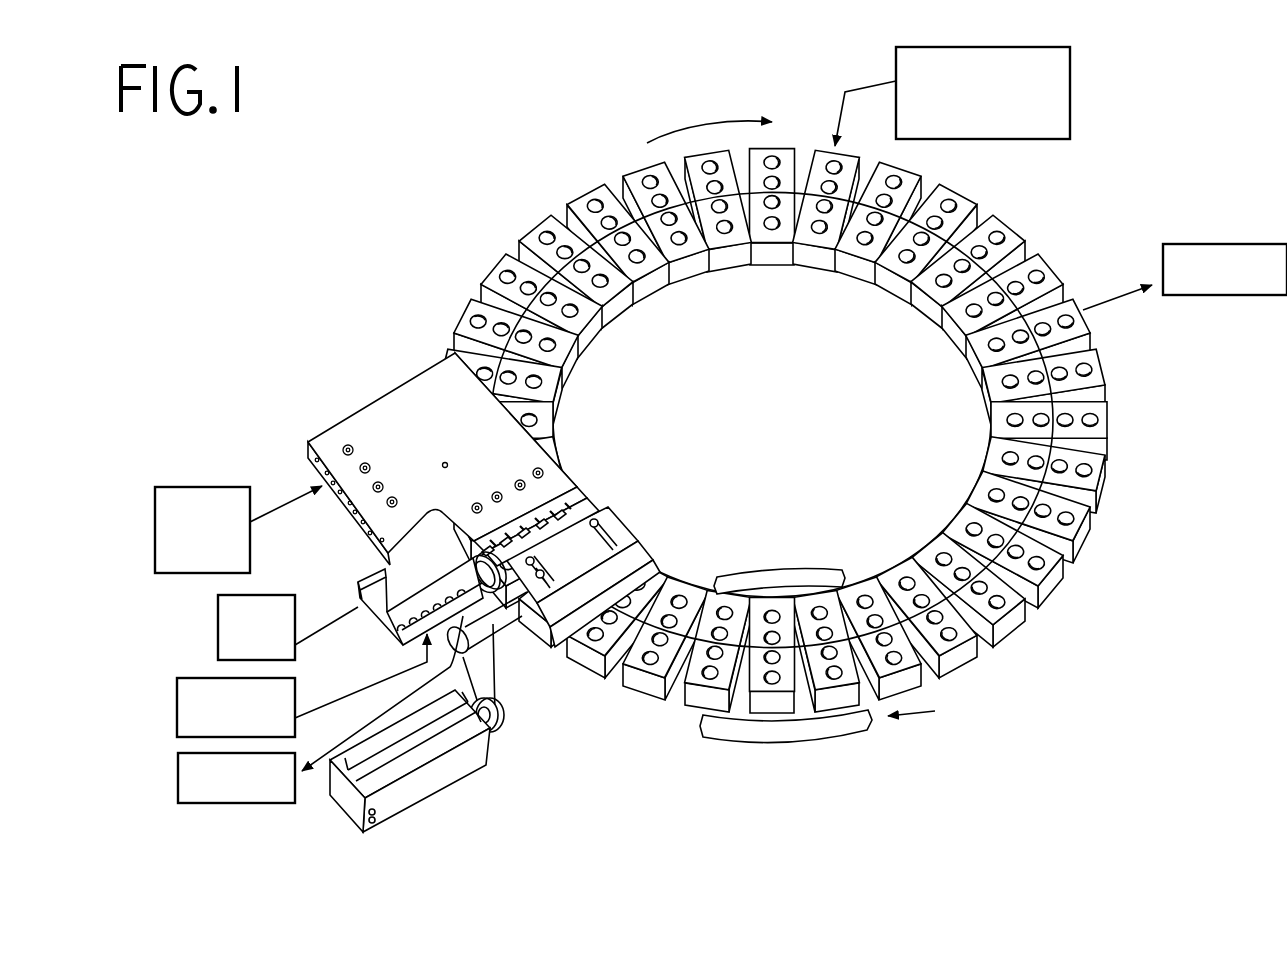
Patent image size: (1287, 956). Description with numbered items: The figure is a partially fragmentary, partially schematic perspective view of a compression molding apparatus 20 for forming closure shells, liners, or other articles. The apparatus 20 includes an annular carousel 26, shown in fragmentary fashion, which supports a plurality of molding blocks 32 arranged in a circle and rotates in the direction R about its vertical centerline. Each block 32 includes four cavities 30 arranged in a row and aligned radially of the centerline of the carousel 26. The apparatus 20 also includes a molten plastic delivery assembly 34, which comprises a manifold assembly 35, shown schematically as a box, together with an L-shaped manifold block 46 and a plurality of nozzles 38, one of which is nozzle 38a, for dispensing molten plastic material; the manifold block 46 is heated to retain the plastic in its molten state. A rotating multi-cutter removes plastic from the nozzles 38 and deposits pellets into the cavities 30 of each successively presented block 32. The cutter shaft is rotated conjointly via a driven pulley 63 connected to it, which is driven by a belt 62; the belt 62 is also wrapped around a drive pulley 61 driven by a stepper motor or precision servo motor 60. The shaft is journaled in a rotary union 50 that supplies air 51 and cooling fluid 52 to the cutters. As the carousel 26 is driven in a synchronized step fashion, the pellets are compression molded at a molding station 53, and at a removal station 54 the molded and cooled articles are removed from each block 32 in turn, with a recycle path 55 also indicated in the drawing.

The compression molding apparatus 20 is at (1147, 134).
The annular carousel 26 is at (848, 740).
The cavities 30 is at (1067, 412).
The molding blocks 32 is at (1080, 535).
The molten plastic delivery assembly 34 is at (567, 460).
The manifold assembly 35 is at (178, 487).
The nozzles 38 is at (580, 497).
The nozzle 38a is at (476, 548).
The L-shaped manifold block 46 is at (356, 406).
The rotary union 50 is at (408, 591).
The air 51 is at (218, 622).
The cooling fluid 52 is at (177, 707).
The molding station 53 is at (1070, 91).
The removal station 54 is at (1257, 291).
The recycle station 55 is at (273, 803).
The stepper motor or precision servo motor 60 is at (440, 780).
The drive pulley 61 is at (497, 714).
The belt 62 is at (495, 677).
The driven pulley 63 is at (477, 561).